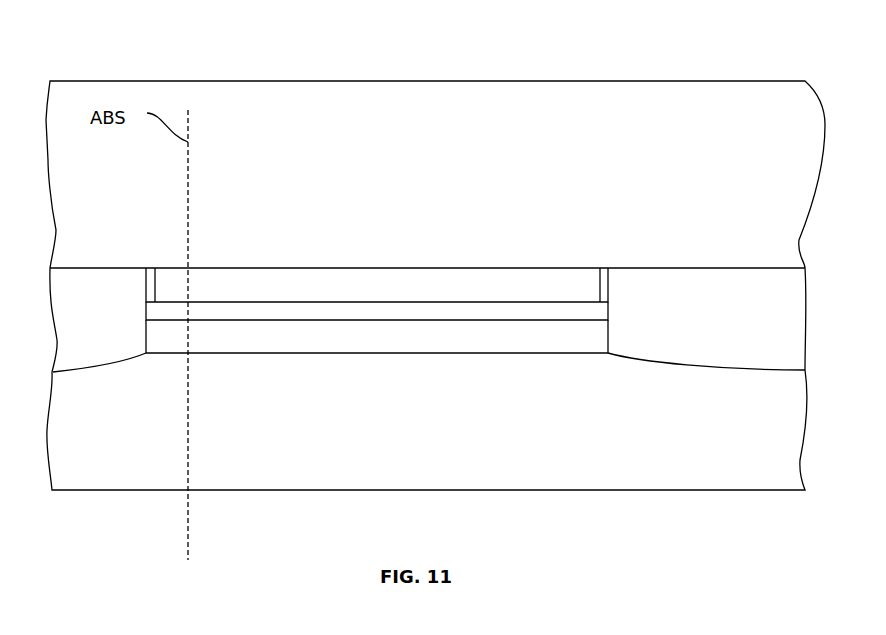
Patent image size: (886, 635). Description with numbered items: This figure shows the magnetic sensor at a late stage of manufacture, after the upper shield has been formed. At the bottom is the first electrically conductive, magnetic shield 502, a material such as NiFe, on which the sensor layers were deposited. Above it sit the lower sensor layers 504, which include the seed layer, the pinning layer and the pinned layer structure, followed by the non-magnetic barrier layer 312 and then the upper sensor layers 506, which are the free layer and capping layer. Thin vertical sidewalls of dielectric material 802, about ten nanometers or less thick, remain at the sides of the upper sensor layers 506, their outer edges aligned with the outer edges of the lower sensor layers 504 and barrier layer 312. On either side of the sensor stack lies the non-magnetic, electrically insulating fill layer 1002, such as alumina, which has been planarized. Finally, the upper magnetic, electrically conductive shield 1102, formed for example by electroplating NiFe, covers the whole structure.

The upper magnetic, electrically conductive shield 1102 is at (498, 165).
The non-magnetic, electrically insulating fill layer 1002 is at (128, 293).
The dielectric layer 802 is at (151, 283).
The upper sensor layers 506 is at (470, 284).
The non-magnetic barrier layer 312 is at (612, 311).
The lower sensor layers 504 is at (470, 337).
The first electrically conductive, magnetic shield 502 is at (479, 422).